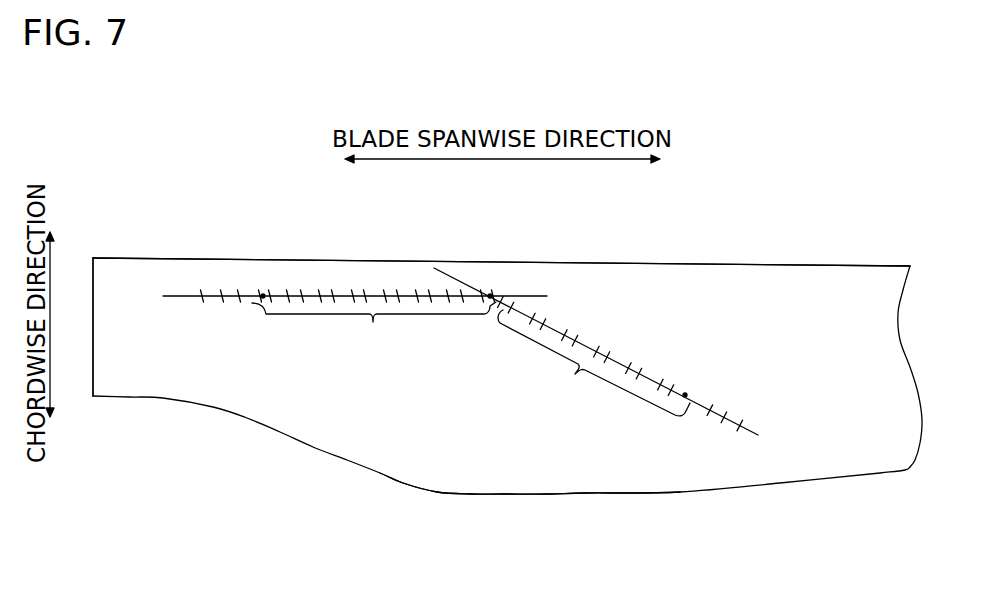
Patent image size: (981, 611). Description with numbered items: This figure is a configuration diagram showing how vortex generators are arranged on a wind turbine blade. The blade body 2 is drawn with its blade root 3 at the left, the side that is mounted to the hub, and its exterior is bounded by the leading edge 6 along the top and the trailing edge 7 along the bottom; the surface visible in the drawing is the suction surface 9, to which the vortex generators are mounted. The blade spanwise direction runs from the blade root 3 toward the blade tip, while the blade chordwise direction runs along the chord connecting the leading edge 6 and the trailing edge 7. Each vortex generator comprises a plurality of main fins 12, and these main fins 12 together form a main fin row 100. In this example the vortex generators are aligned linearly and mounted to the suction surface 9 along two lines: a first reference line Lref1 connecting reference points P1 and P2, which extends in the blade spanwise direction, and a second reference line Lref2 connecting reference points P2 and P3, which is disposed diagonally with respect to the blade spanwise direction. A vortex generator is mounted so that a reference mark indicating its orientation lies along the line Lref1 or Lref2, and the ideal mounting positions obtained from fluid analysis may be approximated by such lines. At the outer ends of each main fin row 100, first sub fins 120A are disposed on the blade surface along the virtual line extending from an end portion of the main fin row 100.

The blade body 2 is at (795, 280).
The blade root 3 is at (93, 365).
The leading edge 6 is at (613, 259).
The trailing edge 7 is at (583, 494).
The suction surface 9 is at (463, 458).
The main fins 12 is at (300, 296).
The first sub fin 120A is at (239, 296).
The main fin row 100 is at (471, 359).
The first reference line Lref1 is at (177, 293).
The second reference line Lref2 is at (760, 432).
The reference point P1 is at (263, 300).
The reference point P2 is at (489, 300).
The reference point P3 is at (685, 399).